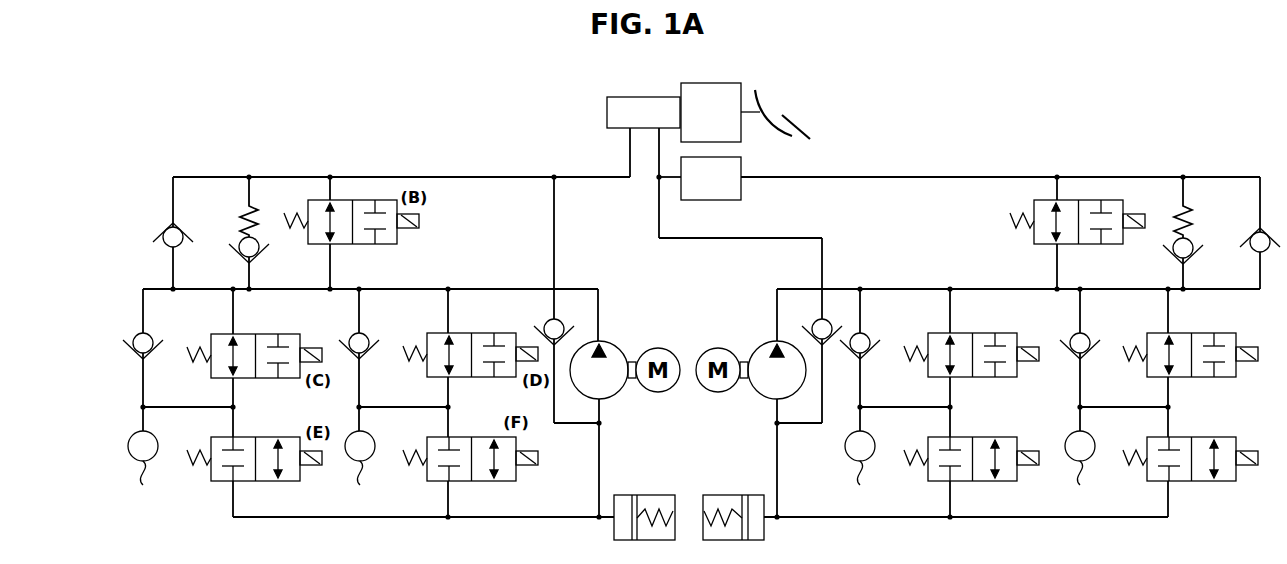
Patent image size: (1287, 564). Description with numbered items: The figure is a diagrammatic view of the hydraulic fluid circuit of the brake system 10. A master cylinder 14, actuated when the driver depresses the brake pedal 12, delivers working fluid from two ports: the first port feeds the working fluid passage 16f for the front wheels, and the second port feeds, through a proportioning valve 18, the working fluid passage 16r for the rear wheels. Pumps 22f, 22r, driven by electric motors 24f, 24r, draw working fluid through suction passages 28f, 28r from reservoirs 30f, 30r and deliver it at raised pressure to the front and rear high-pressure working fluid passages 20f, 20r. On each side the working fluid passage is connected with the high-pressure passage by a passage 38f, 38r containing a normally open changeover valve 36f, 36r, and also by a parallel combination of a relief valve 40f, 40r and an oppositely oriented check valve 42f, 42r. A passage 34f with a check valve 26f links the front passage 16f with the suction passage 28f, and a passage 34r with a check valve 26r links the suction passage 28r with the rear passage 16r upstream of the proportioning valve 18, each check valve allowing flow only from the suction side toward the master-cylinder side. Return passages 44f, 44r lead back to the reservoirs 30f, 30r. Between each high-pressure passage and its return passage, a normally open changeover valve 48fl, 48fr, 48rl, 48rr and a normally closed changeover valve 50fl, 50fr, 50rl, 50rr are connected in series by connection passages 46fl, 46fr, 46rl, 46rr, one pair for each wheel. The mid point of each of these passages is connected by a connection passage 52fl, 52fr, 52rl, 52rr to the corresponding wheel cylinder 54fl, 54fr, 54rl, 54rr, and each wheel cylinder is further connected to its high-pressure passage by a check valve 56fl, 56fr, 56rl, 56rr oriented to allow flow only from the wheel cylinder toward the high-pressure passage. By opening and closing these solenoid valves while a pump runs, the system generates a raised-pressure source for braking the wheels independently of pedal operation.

The brake system 10 is at (172, 138).
The brake pedal 12 is at (798, 124).
The master cylinder 14 is at (620, 98).
The working fluid passage for front wheels 16f is at (427, 177).
The working fluid passage for rear wheels 16r is at (917, 177).
The proportioning valve 18 is at (722, 200).
The front high-pressure working fluid passage 20f is at (360, 289).
The rear high-pressure working fluid passage 20r is at (994, 289).
The front pump 22f is at (614, 394).
The rear pump 22r is at (762, 394).
The front electric motor 24f is at (658, 348).
The rear electric motor 24r is at (720, 348).
The front check valve 26f is at (568, 322).
The rear check valve 26r is at (808, 322).
The front suction passage 28f is at (598, 503).
The rear suction passage 28r is at (778, 475).
The front reservoir 30f is at (647, 495).
The rear reservoir 30r is at (720, 495).
The front passage with check valve 34f is at (554, 217).
The rear passage with check valve 34r is at (822, 250).
The front changeover valve 36f is at (342, 200).
The rear changeover valve 36r is at (1091, 200).
The front connecting passage 38f is at (329, 262).
The rear connecting passage 38r is at (1057, 192).
The front relief valve 40f is at (238, 247).
The rear relief valve 40r is at (1194, 252).
The front check valve 42f is at (162, 234).
The rear check valve 42r is at (1250, 236).
The front return passage 44f is at (364, 518).
The rear return passage 44r is at (966, 518).
The front left connection passage 46fl is at (231, 306).
The front right connection passage 46fr is at (448, 293).
The rear left connection passage 46rl is at (952, 502).
The rear right connection passage 46rr is at (1170, 512).
The front left changeover valve 48fl is at (246, 334).
The front right changeover valve 48fr is at (462, 333).
The rear left changeover valve 48rl is at (963, 333).
The rear right changeover valve 48rr is at (1182, 333).
The front left changeover valve 50fl is at (246, 481).
The front right changeover valve 50fr is at (462, 481).
The rear left changeover valve 50rl is at (963, 437).
The rear right changeover valve 50rr is at (1182, 437).
The front left connection passage 52fl is at (158, 407).
The front right connection passage 52fr is at (372, 407).
The rear left connection passage 52rl is at (872, 407).
The rear right connection passage 52rr is at (1092, 407).
The front left wheel cylinder 54fl is at (141, 461).
The front right wheel cylinder 54fr is at (360, 461).
The rear left wheel cylinder 54rl is at (871, 461).
The rear right wheel cylinder 54rr is at (1092, 461).
The front left check valve 56fl is at (134, 334).
The front right check valve 56fr is at (368, 334).
The rear left check valve 56rl is at (869, 334).
The rear right check valve 56rr is at (1089, 334).